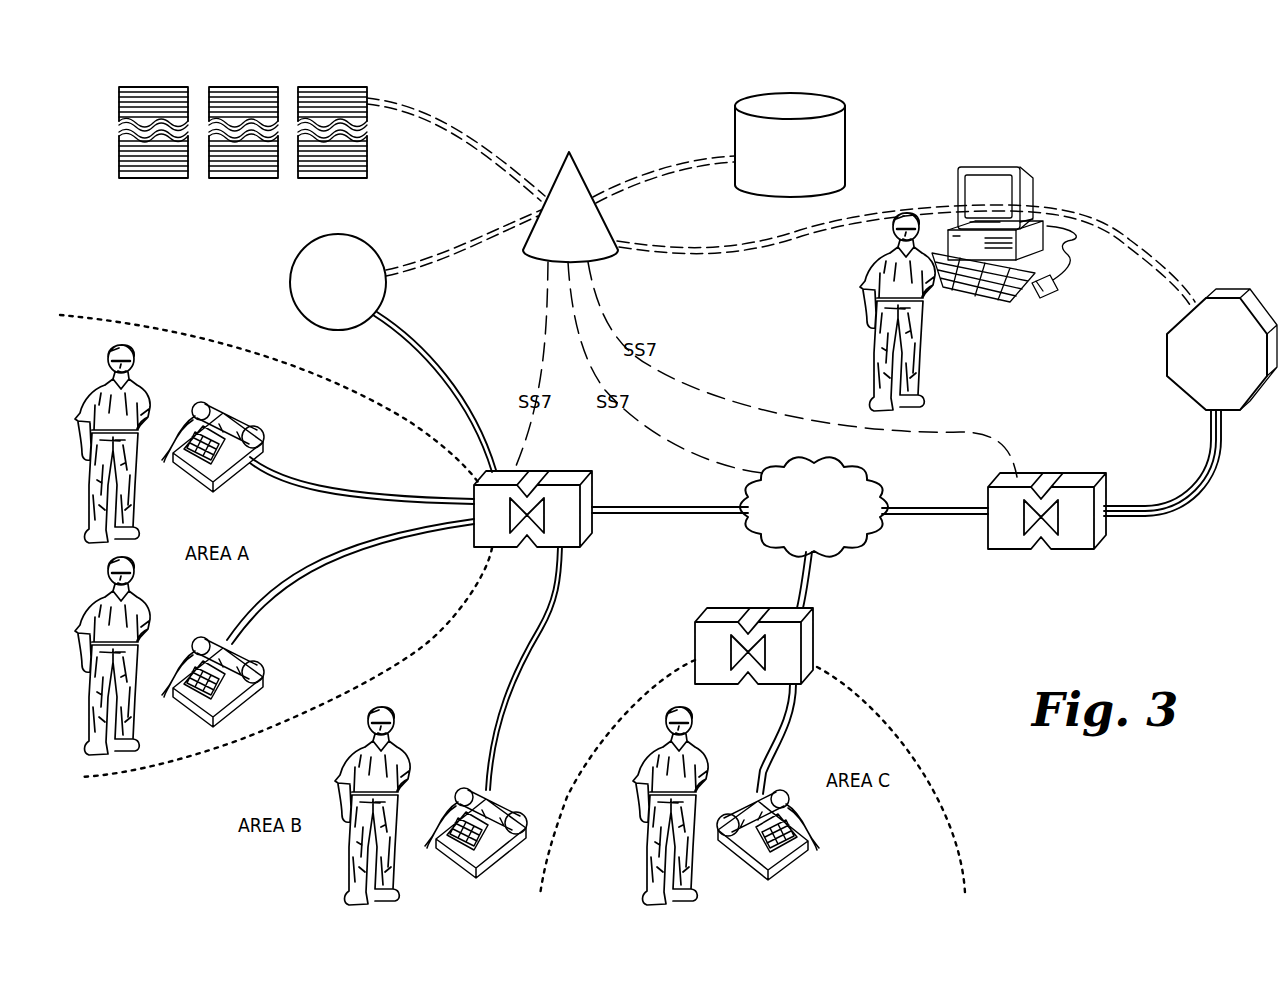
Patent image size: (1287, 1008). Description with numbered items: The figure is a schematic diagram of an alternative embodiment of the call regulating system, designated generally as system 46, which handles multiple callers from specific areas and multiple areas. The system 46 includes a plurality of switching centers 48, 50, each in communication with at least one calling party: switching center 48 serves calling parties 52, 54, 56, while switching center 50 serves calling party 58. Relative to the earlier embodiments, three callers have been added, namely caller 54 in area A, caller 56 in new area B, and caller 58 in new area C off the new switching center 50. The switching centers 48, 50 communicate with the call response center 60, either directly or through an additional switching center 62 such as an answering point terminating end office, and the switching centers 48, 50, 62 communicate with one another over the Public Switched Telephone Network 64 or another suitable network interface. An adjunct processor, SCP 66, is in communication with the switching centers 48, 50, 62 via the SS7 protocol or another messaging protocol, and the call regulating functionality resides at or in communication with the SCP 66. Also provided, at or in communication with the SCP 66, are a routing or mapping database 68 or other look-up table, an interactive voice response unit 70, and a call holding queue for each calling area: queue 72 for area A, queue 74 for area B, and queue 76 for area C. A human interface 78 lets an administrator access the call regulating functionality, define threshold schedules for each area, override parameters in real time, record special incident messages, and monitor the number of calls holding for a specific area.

The system 46 is at (870, 138).
The switching center 48 is at (590, 538).
The switching center 50 is at (812, 630).
The calling party 52 is at (263, 427).
The calling party 54 is at (263, 663).
The calling party 56 is at (467, 797).
The calling party 58 is at (822, 857).
The call response center 60 is at (1222, 317).
The additional switching center 62 is at (1103, 535).
The Public Switched Telephone Network (PSTN) 64 is at (870, 537).
The SCP 66 is at (557, 177).
The routing or mapping database 68 is at (735, 145).
The interactive voice response unit (VRU) 70 is at (290, 284).
The queue 72 is at (135, 178).
The queue 74 is at (223, 178).
The queue 76 is at (312, 178).
The human interface 78 is at (1030, 180).